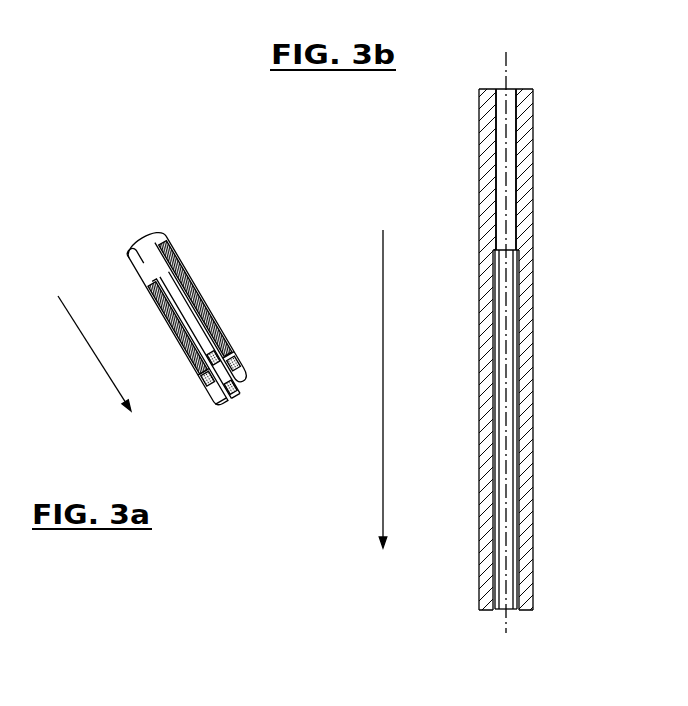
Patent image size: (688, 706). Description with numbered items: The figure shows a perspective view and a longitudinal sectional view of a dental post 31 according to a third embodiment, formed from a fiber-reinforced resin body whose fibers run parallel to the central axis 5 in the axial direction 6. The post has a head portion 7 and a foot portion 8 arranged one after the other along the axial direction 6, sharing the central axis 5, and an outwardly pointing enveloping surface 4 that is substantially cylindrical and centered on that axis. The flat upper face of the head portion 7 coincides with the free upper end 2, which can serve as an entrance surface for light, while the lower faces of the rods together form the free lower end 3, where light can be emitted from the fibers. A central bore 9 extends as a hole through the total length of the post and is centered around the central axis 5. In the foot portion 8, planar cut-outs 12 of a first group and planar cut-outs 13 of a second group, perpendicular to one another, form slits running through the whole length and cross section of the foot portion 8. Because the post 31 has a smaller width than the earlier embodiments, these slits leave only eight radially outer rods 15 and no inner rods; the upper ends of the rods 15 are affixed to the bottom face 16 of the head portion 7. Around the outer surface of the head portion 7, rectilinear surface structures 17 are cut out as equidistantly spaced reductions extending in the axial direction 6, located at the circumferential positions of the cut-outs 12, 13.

In FIG. 3a, the free upper end 2 is at (104, 242).
In FIG. 3b, the free upper end 2 is at (478, 65).
In FIG. 3a, the free lower end 3 is at (220, 398).
In FIG. 3b, the free lower end 3 is at (527, 611).
In FIG. 3a, the enveloping surface 4 is at (183, 313).
In FIG. 3b, the central axis 5 is at (528, 323).
In FIG. 3a, the axial direction 6 is at (74, 322).
In FIG. 3b, the axial direction 6 is at (381, 374).
In FIG. 3a, the head portion 7 is at (173, 255).
In FIG. 3b, the head portion 7 is at (520, 195).
In FIG. 3a, the foot portion 8 is at (195, 292).
In FIG. 3b, the foot portion 8 is at (488, 403).
In FIG. 3a, the central bore 9 is at (242, 379).
In FIG. 3b, the central bore 9 is at (497, 71).
In FIG. 3a, the planar cut-outs 12 is at (260, 338).
In FIG. 3b, the planar cut-outs 12 is at (678, 330).
In FIG. 3a, the planar cut-outs 13 is at (252, 408).
In FIG. 3b, the planar cut-outs 13 is at (493, 624).
In FIG. 3a, the radially outer rods 15 is at (187, 384).
In FIG. 3b, the radially outer rods 15 is at (486, 475).
In FIG. 3a, the bottom face 16 is at (155, 280).
In FIG. 3b, the bottom face 16 is at (526, 252).
In FIG. 3a, the surface structures 17 is at (149, 205).
In FIG. 3a, the dental post 31 is at (194, 211).
In FIG. 3b, the dental post 31 is at (562, 89).